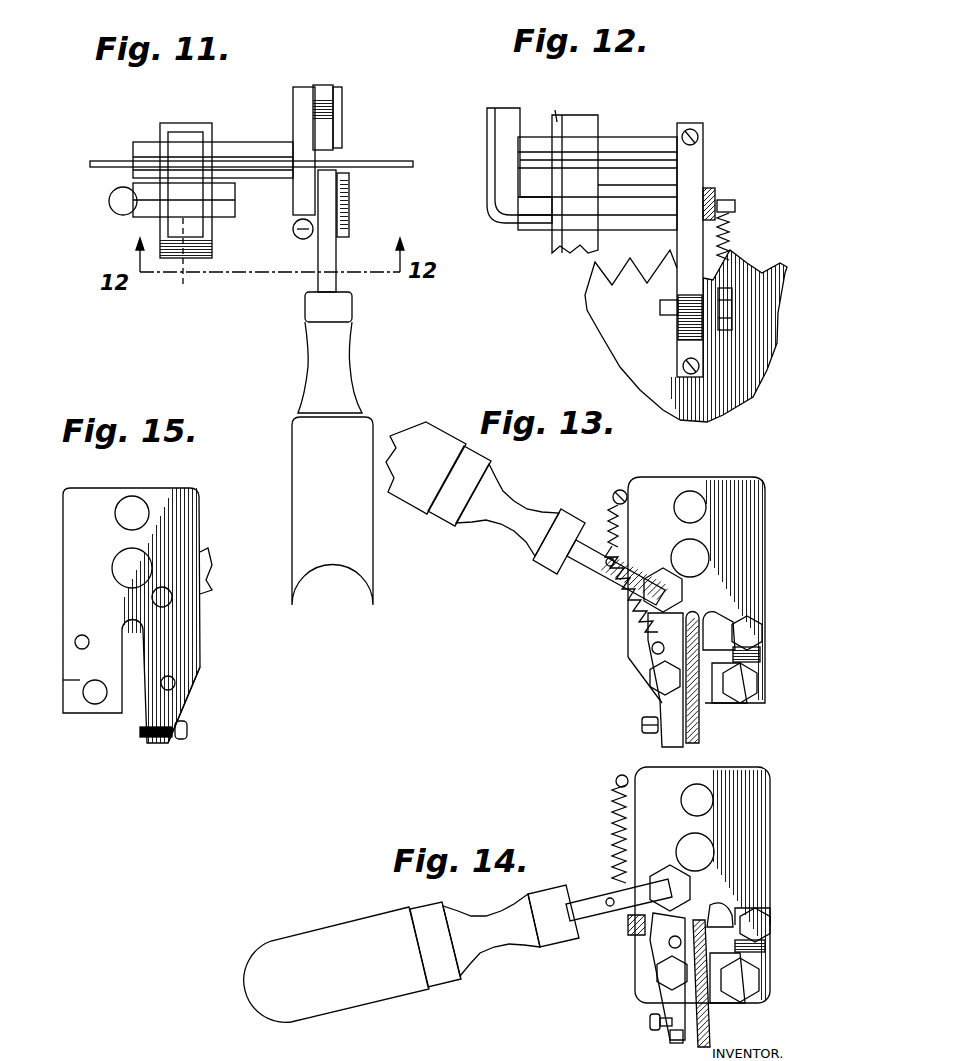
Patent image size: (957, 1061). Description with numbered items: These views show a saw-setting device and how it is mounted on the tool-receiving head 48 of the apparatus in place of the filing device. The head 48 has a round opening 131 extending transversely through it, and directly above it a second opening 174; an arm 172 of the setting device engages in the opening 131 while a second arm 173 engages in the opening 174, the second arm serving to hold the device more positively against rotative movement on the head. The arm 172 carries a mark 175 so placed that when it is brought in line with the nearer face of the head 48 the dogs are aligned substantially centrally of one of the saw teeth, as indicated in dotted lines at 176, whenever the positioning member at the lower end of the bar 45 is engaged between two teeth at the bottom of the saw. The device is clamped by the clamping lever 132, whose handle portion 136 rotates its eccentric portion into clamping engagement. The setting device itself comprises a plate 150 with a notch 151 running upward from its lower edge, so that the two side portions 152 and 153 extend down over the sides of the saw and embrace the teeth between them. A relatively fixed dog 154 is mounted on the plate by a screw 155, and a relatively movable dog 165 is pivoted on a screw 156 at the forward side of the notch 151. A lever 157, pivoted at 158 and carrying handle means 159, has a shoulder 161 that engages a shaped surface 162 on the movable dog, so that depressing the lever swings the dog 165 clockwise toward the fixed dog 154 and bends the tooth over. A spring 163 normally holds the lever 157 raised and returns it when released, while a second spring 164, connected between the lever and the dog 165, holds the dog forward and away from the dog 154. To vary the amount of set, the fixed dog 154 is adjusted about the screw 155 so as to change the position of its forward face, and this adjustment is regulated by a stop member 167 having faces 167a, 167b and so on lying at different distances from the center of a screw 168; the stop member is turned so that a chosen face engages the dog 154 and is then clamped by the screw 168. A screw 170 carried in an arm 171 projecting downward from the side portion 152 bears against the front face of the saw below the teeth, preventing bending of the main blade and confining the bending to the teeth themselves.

In FIG. 12, the bar 45 is at (572, 252).
In FIG. 11, the receiving head 48 is at (185, 205).
In FIG. 12, the receiving head 48 is at (580, 115).
In FIG. 11, the round opening 131 is at (185, 258).
In FIG. 12, the round opening 131 is at (600, 150).
In FIG. 11, the clamping lever 132 is at (122, 214).
In FIG. 12, the clamping lever 132 is at (507, 203).
In FIG. 11, the handle portion 136 is at (110, 204).
In FIG. 11, the plate 150 is at (294, 205).
In FIG. 12, the plate 150 is at (687, 124).
In FIG. 13, the plate 150 is at (758, 512).
In FIG. 14, the plate 150 is at (760, 776).
In FIG. 15, the plate 150 is at (185, 630).
In FIG. 13, the notch 151 is at (680, 672).
In FIG. 13, the side portion 152 is at (652, 664).
In FIG. 15, the side portion 152 is at (201, 667).
In FIG. 13, the side portion 153 is at (761, 656).
In FIG. 15, the side portion 153 is at (78, 676).
In FIG. 11, the relatively fixed dog 154 is at (330, 158).
In FIG. 13, the relatively fixed dog 154 is at (702, 615).
In FIG. 14, the relatively fixed dog 154 is at (727, 912).
In FIG. 13, the screw 155 is at (758, 690).
In FIG. 14, the screw 155 is at (746, 985).
In FIG. 15, the screw 155 is at (95, 696).
In FIG. 12, the screw 156 is at (734, 308).
In FIG. 13, the screw 156 is at (660, 680).
In FIG. 14, the screw 156 is at (665, 975).
In FIG. 15, the screw 156 is at (175, 685).
In FIG. 13, the lever 157 is at (606, 557).
In FIG. 14, the lever 157 is at (605, 910).
In FIG. 11, the pivot 158 is at (340, 174).
In FIG. 14, the pivot 158 is at (662, 872).
In FIG. 11, the handle means 159 is at (353, 552).
In FIG. 14, the handle means 159 is at (365, 998).
In FIG. 14, the shoulder 161 is at (668, 930).
In FIG. 14, the surface 162 is at (675, 913).
In FIG. 11, the spring 163 is at (298, 237).
In FIG. 12, the spring 163 is at (716, 190).
In FIG. 13, the spring 163 is at (620, 490).
In FIG. 14, the spring 163 is at (622, 820).
In FIG. 12, the second spring 164 is at (735, 255).
In FIG. 13, the second spring 164 is at (640, 617).
In FIG. 14, the second spring 164 is at (637, 923).
In FIG. 12, the relatively movable dog 165 is at (704, 335).
In FIG. 13, the relatively movable dog 165 is at (652, 648).
In FIG. 11, the stop member 167 is at (323, 85).
In FIG. 13, the stop member 167 is at (730, 702).
In FIG. 14, the stop member 167 is at (768, 910).
In FIG. 13, the face 167a is at (736, 626).
In FIG. 14, the face 167a is at (748, 946).
In FIG. 13, the face 167b is at (765, 632).
In FIG. 14, the face 167b is at (758, 966).
In FIG. 11, the screw 168 is at (345, 100).
In FIG. 14, the screw 168 is at (771, 926).
In FIG. 14, the screw 170 is at (650, 1022).
In FIG. 15, the screw 170 is at (188, 736).
In FIG. 14, the arm 171 is at (674, 1035).
In FIG. 15, the arm 171 is at (153, 742).
In FIG. 11, the arm 172 is at (262, 131).
In FIG. 12, the arm 172 is at (679, 160).
In FIG. 13, the arm 172 is at (696, 557).
In FIG. 14, the arm 172 is at (702, 850).
In FIG. 15, the arm 172 is at (140, 565).
In FIG. 11, the second arm 173 is at (230, 140).
In FIG. 12, the second arm 173 is at (605, 137).
In FIG. 13, the second arm 173 is at (691, 500).
In FIG. 14, the second arm 173 is at (692, 790).
In FIG. 15, the second arm 173 is at (136, 510).
In FIG. 12, the second opening 174 is at (553, 112).
In FIG. 12, the mark 175 is at (674, 156).
In FIG. 12, the tooth position (dotted lines) 176 is at (731, 228).